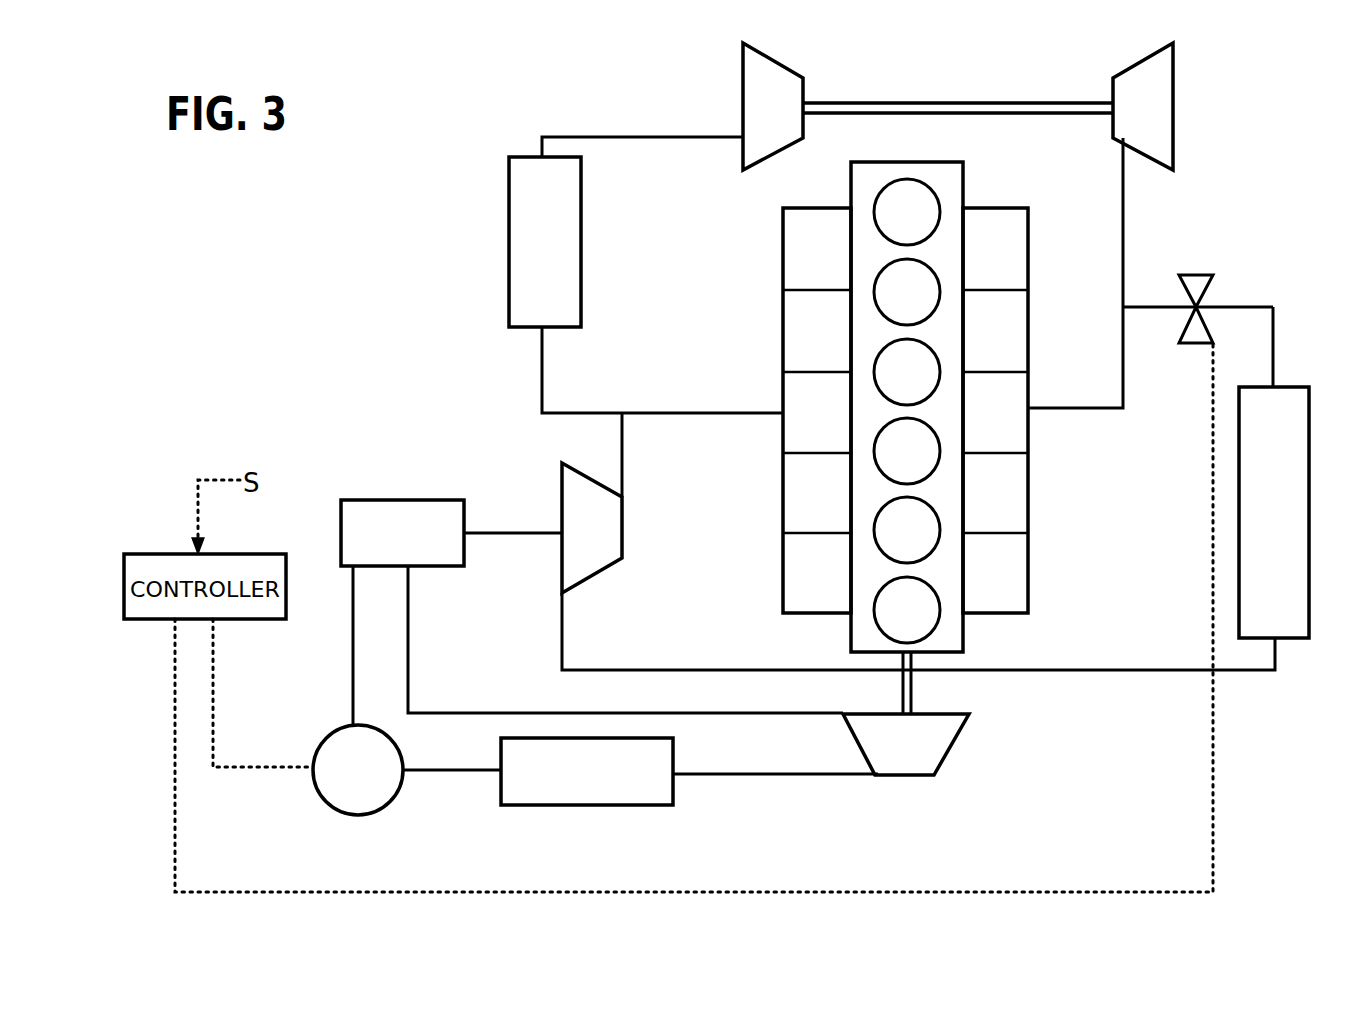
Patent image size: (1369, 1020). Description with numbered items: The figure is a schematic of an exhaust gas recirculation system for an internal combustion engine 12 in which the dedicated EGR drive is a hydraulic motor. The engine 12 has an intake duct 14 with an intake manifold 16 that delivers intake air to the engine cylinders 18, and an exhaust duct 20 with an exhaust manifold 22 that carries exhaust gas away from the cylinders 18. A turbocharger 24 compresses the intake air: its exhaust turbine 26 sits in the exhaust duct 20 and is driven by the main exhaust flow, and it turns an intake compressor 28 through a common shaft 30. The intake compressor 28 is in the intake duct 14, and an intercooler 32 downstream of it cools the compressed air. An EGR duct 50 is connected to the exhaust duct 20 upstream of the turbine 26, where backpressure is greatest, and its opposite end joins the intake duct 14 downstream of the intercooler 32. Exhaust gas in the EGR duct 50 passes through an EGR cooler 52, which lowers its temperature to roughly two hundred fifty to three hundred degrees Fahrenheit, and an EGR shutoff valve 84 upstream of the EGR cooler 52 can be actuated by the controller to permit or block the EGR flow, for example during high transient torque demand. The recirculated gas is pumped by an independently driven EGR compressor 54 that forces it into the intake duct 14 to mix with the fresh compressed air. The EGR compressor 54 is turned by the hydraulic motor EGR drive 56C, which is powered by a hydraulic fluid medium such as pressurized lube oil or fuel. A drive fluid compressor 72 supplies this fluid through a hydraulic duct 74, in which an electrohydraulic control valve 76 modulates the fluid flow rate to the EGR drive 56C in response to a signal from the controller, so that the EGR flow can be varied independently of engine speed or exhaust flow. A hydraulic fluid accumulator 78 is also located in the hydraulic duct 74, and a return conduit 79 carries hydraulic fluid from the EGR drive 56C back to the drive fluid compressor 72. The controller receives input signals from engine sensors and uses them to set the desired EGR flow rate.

The internal combustion engine 12 is at (677, 247).
The intake duct 14 is at (542, 366).
The intake manifold 16 is at (783, 272).
The engine cylinders 18 is at (905, 190).
The exhaust duct 20 is at (1082, 410).
The exhaust manifold 22 is at (1028, 250).
The turbocharger 24 is at (1214, 64).
The exhaust turbine 26 is at (1148, 68).
The intake compressor 28 is at (762, 68).
The common shaft 30 is at (913, 100).
The intercooler 32 is at (509, 218).
The EGR duct 50 is at (1085, 672).
The EGR cooler 52 is at (1295, 425).
The EGR compressor 54 is at (613, 526).
The hydraulic motor EGR drive 56C is at (381, 500).
The drive fluid compressor 72 is at (938, 748).
The hydraulic duct 74 is at (700, 776).
The electrohydraulic control valve 76 is at (330, 760).
The hydraulic fluid accumulator 78 is at (566, 807).
The return conduit 79 is at (486, 713).
The EGR shutoff valve 84 is at (1187, 275).